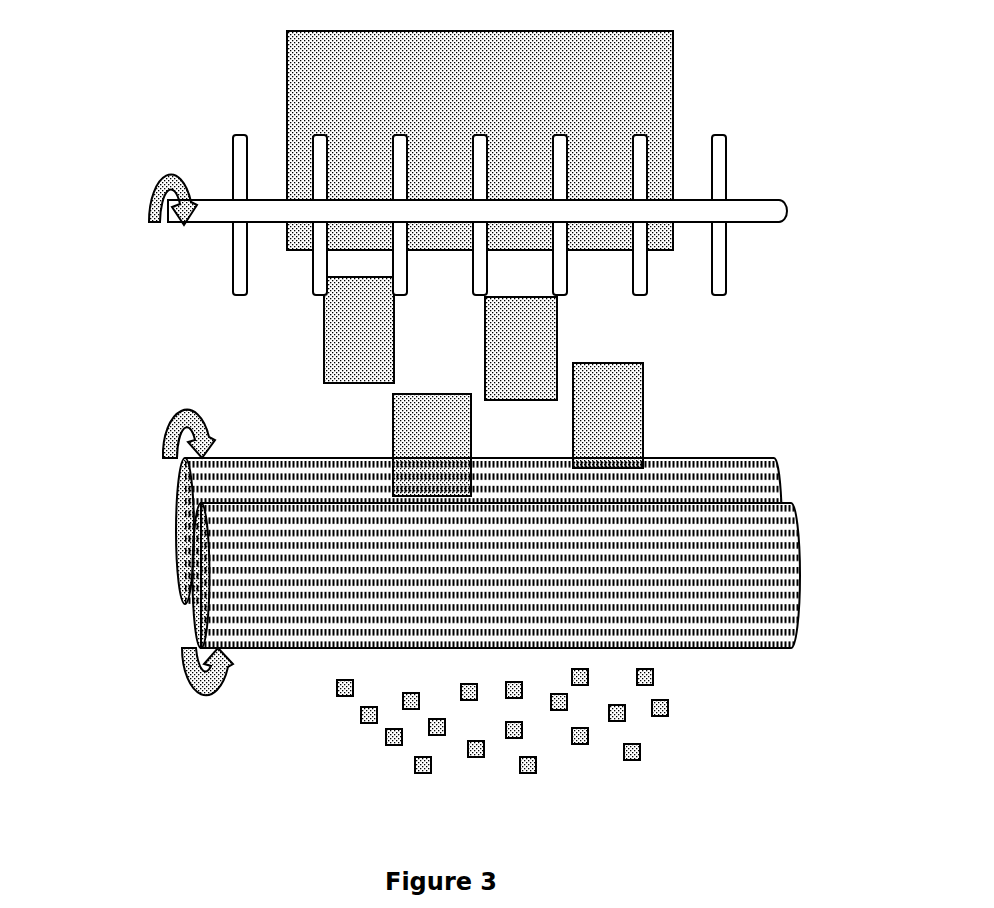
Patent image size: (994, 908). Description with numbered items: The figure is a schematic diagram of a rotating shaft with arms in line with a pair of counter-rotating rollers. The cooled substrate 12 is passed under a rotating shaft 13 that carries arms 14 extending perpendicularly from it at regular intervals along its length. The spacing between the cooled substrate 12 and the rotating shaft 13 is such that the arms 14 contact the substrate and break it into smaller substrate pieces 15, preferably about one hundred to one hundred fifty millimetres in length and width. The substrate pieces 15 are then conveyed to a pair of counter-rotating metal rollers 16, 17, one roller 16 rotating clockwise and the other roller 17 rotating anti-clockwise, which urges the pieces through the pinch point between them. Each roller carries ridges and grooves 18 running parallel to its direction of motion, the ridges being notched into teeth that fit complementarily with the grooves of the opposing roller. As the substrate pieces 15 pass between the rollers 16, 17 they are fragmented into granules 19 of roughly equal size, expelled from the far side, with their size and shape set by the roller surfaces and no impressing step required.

The cooled substrate 12 is at (673, 62).
The rotating shaft 13 is at (760, 197).
The arms 14 is at (232, 132).
The substrate pieces 15 is at (645, 395).
The roller 16 is at (175, 532).
The roller 17 is at (193, 623).
The ridges and grooves 18 is at (728, 487).
The granules 19 is at (383, 738).